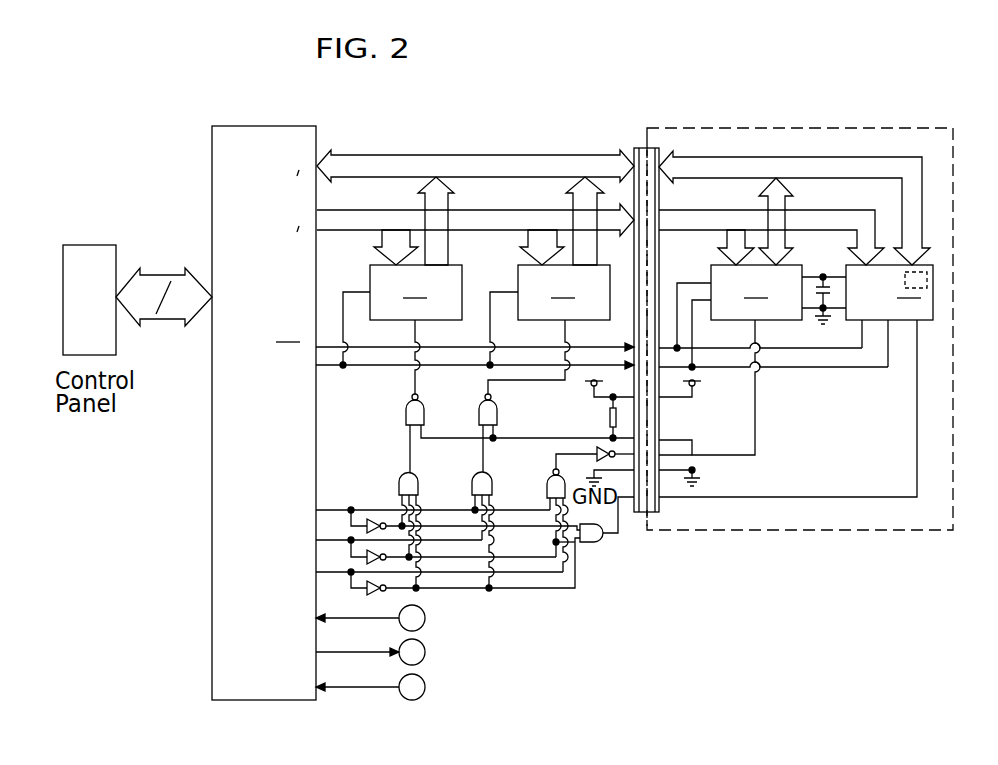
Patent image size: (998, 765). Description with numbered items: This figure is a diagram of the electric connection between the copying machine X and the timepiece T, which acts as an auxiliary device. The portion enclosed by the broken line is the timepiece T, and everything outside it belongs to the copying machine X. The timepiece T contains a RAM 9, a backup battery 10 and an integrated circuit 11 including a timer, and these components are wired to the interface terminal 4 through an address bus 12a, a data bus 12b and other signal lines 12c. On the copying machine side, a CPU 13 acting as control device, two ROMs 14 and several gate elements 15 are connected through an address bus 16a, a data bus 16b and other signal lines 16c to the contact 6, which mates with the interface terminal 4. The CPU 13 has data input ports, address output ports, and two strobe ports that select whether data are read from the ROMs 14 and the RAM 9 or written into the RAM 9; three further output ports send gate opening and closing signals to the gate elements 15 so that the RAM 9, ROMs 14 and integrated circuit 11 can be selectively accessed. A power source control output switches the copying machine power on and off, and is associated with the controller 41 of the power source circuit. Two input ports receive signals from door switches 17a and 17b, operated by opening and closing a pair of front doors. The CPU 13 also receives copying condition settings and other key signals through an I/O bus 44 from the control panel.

The CPU 13 is at (212, 150).
The I/O bus 44 is at (163, 272).
The data bus 16b is at (520, 155).
The address bus 16a is at (500, 210).
The ROM 14 is at (370, 272).
The gate element 15 is at (405, 405).
The signal lines 16c is at (499, 602).
The door switch 17a is at (425, 618).
The controller 41 is at (425, 653).
The door switch 17b is at (424, 692).
The interface terminal 4 is at (656, 506).
The contact 6 is at (646, 356).
The RAM 9 is at (732, 322).
The backup battery 10 is at (823, 274).
The integrated circuit 11 is at (933, 278).
The address bus 12a is at (820, 210).
The data bus 12b is at (818, 157).
The signal lines 12c is at (772, 377).
The copying machine X is at (574, 626).
The timepiece T is at (740, 532).